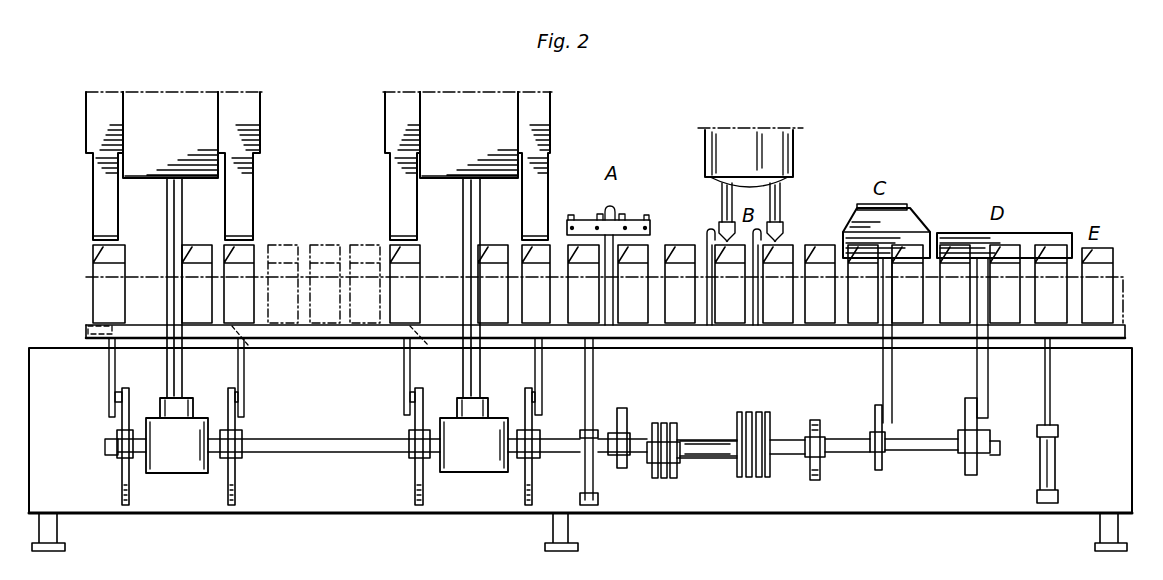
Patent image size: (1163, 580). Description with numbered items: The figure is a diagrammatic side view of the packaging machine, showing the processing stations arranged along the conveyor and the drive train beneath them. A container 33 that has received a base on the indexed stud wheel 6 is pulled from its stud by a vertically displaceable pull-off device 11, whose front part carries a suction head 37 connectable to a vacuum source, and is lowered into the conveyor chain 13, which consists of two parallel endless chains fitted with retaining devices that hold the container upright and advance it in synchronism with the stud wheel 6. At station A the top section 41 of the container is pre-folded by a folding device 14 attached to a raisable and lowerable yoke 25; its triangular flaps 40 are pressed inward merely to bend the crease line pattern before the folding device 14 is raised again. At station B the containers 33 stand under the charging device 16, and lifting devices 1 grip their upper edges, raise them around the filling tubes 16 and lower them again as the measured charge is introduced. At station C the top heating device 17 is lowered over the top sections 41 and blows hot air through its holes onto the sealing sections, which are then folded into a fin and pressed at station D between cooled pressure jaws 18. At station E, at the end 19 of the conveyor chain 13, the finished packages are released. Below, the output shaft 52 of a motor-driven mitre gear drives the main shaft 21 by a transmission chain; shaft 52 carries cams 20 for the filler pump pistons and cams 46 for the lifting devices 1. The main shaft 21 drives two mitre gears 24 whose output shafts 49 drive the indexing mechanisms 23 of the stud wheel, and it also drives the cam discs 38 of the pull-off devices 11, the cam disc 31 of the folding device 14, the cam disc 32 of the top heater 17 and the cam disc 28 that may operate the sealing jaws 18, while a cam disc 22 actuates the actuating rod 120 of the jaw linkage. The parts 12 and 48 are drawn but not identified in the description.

The lifting devices 1 is at (707, 236).
The stud wheel 6 is at (100, 200).
The pull-off device 11 is at (109, 378).
The conveyor track 12 is at (330, 333).
The conveyor chain 13 is at (660, 338).
The folding device 14 is at (618, 228).
The charging device 16 is at (722, 198).
The top heating device 17 is at (912, 240).
The pressure jaws 18 is at (1052, 240).
The end of the conveyor chain 19 is at (1125, 280).
The cams 20 is at (762, 477).
The main shaft 21 is at (350, 448).
The cam disc 22 is at (977, 460).
The indexing mechanisms 23 is at (162, 160).
The mitre gears 24 is at (165, 460).
The yoke 25 is at (593, 228).
The cam disc 28 is at (900, 215).
The cam disc 31 is at (624, 468).
The cam disc 32 is at (882, 448).
The container 33 is at (96, 292).
The suction head 37 is at (88, 333).
The cam discs 38 is at (122, 420).
The triangular flaps 40 is at (570, 220).
The top section 41 is at (642, 250).
The cams 46 is at (665, 478).
The cylinder 48 is at (1055, 458).
The output shafts 49 is at (167, 372).
The output shaft 52 is at (718, 460).
The actuating rod 120 is at (988, 370).